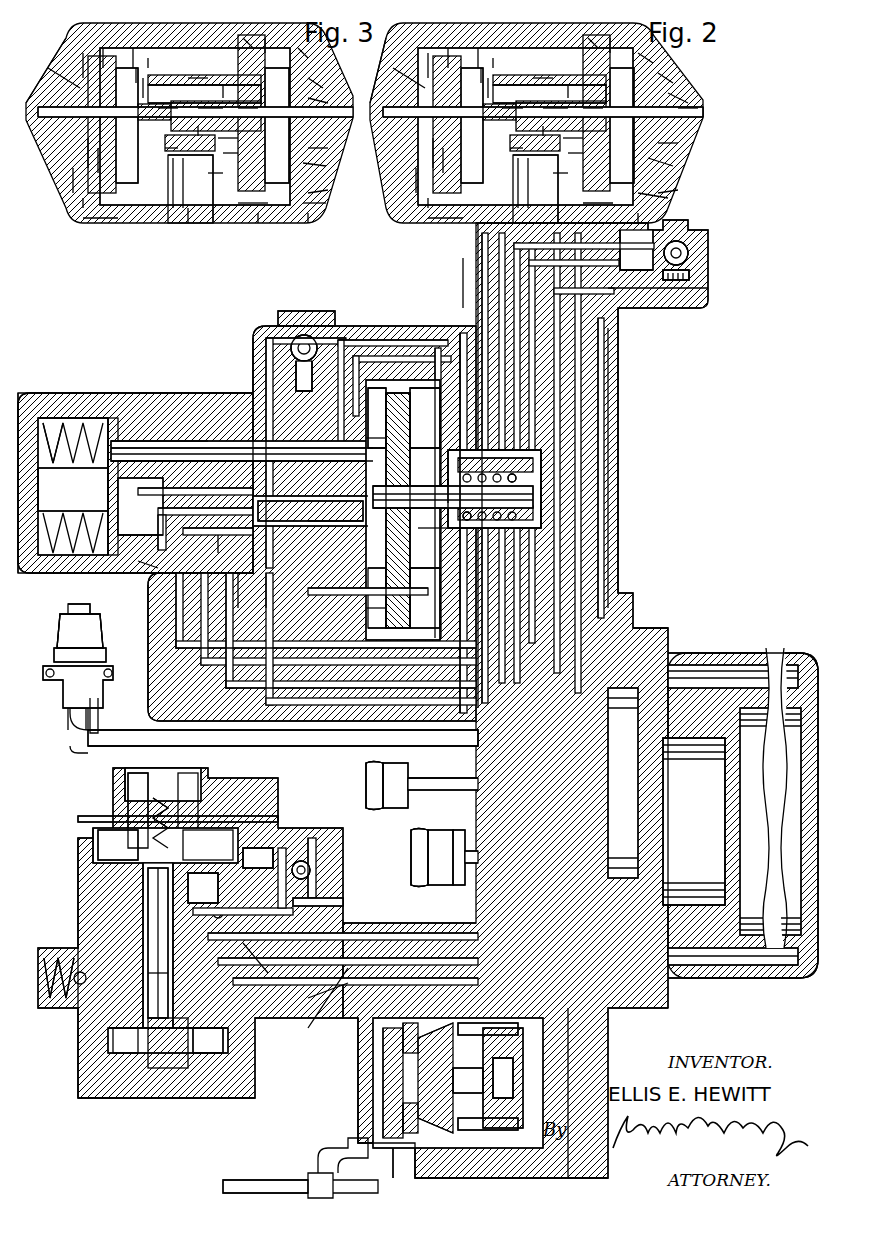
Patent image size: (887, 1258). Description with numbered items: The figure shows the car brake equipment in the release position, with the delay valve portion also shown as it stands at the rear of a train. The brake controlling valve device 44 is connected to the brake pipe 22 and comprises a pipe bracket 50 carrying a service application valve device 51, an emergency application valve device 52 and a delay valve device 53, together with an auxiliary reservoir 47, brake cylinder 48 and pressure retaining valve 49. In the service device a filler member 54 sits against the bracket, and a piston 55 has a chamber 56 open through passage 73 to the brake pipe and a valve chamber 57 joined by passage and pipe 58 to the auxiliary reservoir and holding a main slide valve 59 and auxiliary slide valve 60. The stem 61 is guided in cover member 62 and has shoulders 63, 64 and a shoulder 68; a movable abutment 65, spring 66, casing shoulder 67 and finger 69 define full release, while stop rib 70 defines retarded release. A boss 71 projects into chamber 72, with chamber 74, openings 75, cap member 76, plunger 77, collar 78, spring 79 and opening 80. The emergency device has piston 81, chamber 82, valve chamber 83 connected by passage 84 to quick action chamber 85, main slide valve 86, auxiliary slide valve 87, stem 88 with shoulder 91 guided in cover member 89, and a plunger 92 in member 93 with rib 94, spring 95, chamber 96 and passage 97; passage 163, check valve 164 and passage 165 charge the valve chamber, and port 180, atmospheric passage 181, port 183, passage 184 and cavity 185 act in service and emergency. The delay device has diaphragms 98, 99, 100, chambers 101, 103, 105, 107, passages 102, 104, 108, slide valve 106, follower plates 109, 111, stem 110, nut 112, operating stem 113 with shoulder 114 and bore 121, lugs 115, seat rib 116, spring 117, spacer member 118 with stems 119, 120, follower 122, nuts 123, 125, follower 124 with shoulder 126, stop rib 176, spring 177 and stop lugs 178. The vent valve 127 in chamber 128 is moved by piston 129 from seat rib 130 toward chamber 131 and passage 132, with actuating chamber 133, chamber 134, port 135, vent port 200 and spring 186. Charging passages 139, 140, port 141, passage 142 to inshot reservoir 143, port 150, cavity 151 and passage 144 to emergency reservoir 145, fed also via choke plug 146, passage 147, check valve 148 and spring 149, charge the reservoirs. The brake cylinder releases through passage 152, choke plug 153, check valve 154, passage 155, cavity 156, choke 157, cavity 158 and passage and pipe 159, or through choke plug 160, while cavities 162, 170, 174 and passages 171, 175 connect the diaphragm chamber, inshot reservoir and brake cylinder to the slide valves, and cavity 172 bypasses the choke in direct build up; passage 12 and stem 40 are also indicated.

In FIG. 2, the passage 12 is at (267, 577).
In FIG. 2, the brake pipe 22 is at (240, 1172).
In FIG. 2, the valve stem 40 is at (162, 945).
In FIG. 2, the brake controlling valve device 44 is at (432, 1180).
In FIG. 2, the auxiliary reservoir 47 is at (350, 762).
In FIG. 2, the brake cylinder 48 is at (397, 842).
In FIG. 2, the pressure retaining valve 49 is at (46, 623).
In FIG. 2, the pipe bracket 50 is at (620, 380).
In FIG. 2, the service application valve device 51 is at (112, 385).
In FIG. 2, the emergency application valve device 52 is at (62, 875).
In FIG. 3, the delay valve device 53 is at (142, 48).
In FIG. 2, the delay valve device 53 is at (488, 48).
In FIG. 2, the filler member 54 is at (432, 340).
In FIG. 2, the piston 55 is at (445, 392).
In FIG. 2, the chamber 56 is at (440, 405).
In FIG. 2, the valve chamber 57 is at (170, 455).
In FIG. 3, the passage and pipe 58 is at (302, 212).
In FIG. 2, the passage and pipe 58 is at (436, 785).
In FIG. 2, the main slide valve 59 is at (165, 480).
In FIG. 2, the auxiliary slide valve 60 is at (240, 455).
In FIG. 2, the stem 61 is at (215, 436).
In FIG. 2, the cover member 62 is at (20, 400).
In FIG. 2, the shoulder 63 is at (380, 480).
In FIG. 2, the shoulder 64 is at (125, 480).
In FIG. 2, the movable abutment 65 is at (75, 408).
In FIG. 2, the spring 66 is at (50, 420).
In FIG. 2, the shoulder 67 is at (105, 420).
In FIG. 2, the shoulder 68 is at (150, 435).
In FIG. 2, the finger 69 is at (140, 580).
In FIG. 2, the annular stop rib 70 is at (378, 430).
In FIG. 2, the boss 71 is at (528, 445).
In FIG. 2, the chamber 72 is at (533, 520).
In FIG. 2, the passage 73 is at (560, 1150).
In FIG. 2, the chamber 74 is at (520, 470).
In FIG. 2, the openings 75 is at (480, 450).
In FIG. 2, the cap member 76 is at (415, 520).
In FIG. 2, the plunger 77 is at (400, 478).
In FIG. 2, the annular collar 78 is at (440, 455).
In FIG. 2, the spring 79 is at (460, 520).
In FIG. 2, the opening 80 is at (429, 547).
In FIG. 2, the piston 81 is at (90, 868).
In FIG. 2, the chamber 82 is at (90, 832).
In FIG. 2, the valve chamber 83 is at (140, 915).
In FIG. 2, the passage 84 is at (310, 985).
In FIG. 2, the quick action chamber 85 is at (680, 880).
In FIG. 2, the main slide valve 86 is at (135, 905).
In FIG. 2, the auxiliary slide valve 87 is at (140, 970).
In FIG. 2, the stem 88 is at (135, 1018).
In FIG. 2, the cover member 89 is at (80, 1086).
In FIG. 2, the shoulder 91 is at (200, 1045).
In FIG. 2, the plunger 92 is at (135, 805).
In FIG. 2, the member 93 is at (70, 810).
In FIG. 2, the annular rib 94 is at (135, 790).
In FIG. 2, the spring 95 is at (172, 762).
In FIG. 2, the chamber 96 is at (130, 770).
In FIG. 2, the passage 97 is at (165, 830).
In FIG. 3, the flexible diaphragm 98 is at (292, 42).
In FIG. 2, the flexible diaphragm 98 is at (632, 47).
In FIG. 3, the flexible diaphragm 99 is at (136, 72).
In FIG. 2, the flexible diaphragm 99 is at (482, 72).
In FIG. 3, the flexible diaphragm 100 is at (58, 36).
In FIG. 2, the flexible diaphragm 100 is at (395, 36).
In FIG. 3, the chamber 101 is at (292, 72).
In FIG. 2, the chamber 101 is at (652, 67).
In FIG. 3, the passage 102 is at (255, 212).
In FIG. 2, the passage 102 is at (445, 274).
In FIG. 3, the chamber 103 is at (70, 170).
In FIG. 2, the chamber 103 is at (412, 170).
In FIG. 3, the passage 104 is at (75, 212).
In FIG. 2, the passage 104 is at (420, 212).
In FIG. 3, the valve chamber 105 is at (215, 76).
In FIG. 2, the valve chamber 105 is at (560, 76).
In FIG. 3, the slide valve 106 is at (205, 166).
In FIG. 2, the slide valve 106 is at (548, 166).
In FIG. 3, the atmospheric chamber 107 is at (100, 38).
In FIG. 2, the atmospheric chamber 107 is at (442, 38).
In FIG. 3, the atmospheric passage 108 is at (126, 40).
In FIG. 2, the atmospheric passage 108 is at (472, 40).
In FIG. 3, the follower plate 109 is at (257, 30).
In FIG. 2, the follower plate 109 is at (602, 30).
In FIG. 3, the stem 110 is at (300, 142).
In FIG. 2, the stem 110 is at (652, 137).
In FIG. 2, the follower plate 111 is at (670, 102).
In FIG. 3, the nut 112 is at (296, 157).
In FIG. 2, the nut 112 is at (642, 152).
In FIG. 3, the valve operating stem 113 is at (215, 140).
In FIG. 2, the valve operating stem 113 is at (558, 140).
In FIG. 3, the shoulder 114 is at (237, 169).
In FIG. 2, the shoulder 114 is at (578, 169).
In FIG. 3, the lugs 115 is at (300, 186).
In FIG. 2, the lugs 115 is at (650, 160).
In FIG. 3, the seat rib 116 is at (235, 28).
In FIG. 2, the seat rib 116 is at (580, 28).
In FIG. 3, the spring 117 is at (296, 196).
In FIG. 2, the spring 117 is at (632, 186).
In FIG. 3, the combined follower and spacer member 118 is at (75, 58).
In FIG. 2, the combined follower and spacer member 118 is at (420, 58).
In FIG. 3, the stem 119 is at (72, 90).
In FIG. 2, the stem 119 is at (417, 90).
In FIG. 3, the stem 120 is at (212, 97).
In FIG. 2, the stem 120 is at (557, 97).
In FIG. 3, the axial bore 121 is at (250, 97).
In FIG. 2, the axial bore 121 is at (592, 97).
In FIG. 3, the follower plate 122 is at (88, 150).
In FIG. 2, the follower plate 122 is at (435, 150).
In FIG. 3, the nut 123 is at (80, 140).
In FIG. 2, the nut 123 is at (425, 140).
In FIG. 3, the follower 124 is at (190, 68).
In FIG. 2, the follower 124 is at (528, 68).
In FIG. 3, the nut 125 is at (172, 97).
In FIG. 2, the nut 125 is at (520, 97).
In FIG. 3, the shoulder 126 is at (160, 142).
In FIG. 2, the shoulder 126 is at (505, 142).
In FIG. 2, the vent valve 127 is at (500, 1012).
In FIG. 2, the chamber 128 is at (490, 1098).
In FIG. 2, the piston 129 is at (395, 1065).
In FIG. 2, the seat rib 130 is at (450, 1090).
In FIG. 2, the chamber 131 is at (375, 1110).
In FIG. 2, the atmospheric passage 132 is at (385, 1133).
In FIG. 2, the actuating chamber 133 is at (380, 1065).
In FIG. 2, the chamber 134 is at (400, 1080).
In FIG. 2, the port 135 is at (455, 1015).
In FIG. 2, the charging passage 139 is at (402, 380).
In FIG. 2, the charging passage 140 is at (372, 378).
In FIG. 2, the restricted port 141 is at (312, 490).
In FIG. 2, the passage 142 is at (360, 590).
In FIG. 2, the inshot reservoir 143 is at (665, 660).
In FIG. 2, the passage 144 is at (340, 975).
In FIG. 2, the emergency reservoir 145 is at (712, 668).
In FIG. 2, the choke plug 146 is at (456, 325).
In FIG. 2, the passage 147 is at (338, 330).
In FIG. 2, the check valve 148 is at (288, 360).
In FIG. 2, the spring 149 is at (283, 333).
In FIG. 2, the restricted port 150 is at (310, 507).
In FIG. 2, the cavity 151 is at (300, 490).
In FIG. 3, the pipe and passage 152 is at (182, 215).
In FIG. 2, the pipe and passage 152 is at (470, 820).
In FIG. 2, the release choke plug 153 is at (683, 267).
In FIG. 2, the check valve 154 is at (682, 243).
In FIG. 3, the passage 155 is at (255, 198).
In FIG. 2, the passage 155 is at (262, 960).
In FIG. 2, the cavity 156 is at (125, 527).
In FIG. 2, the retarded release choke 157 is at (177, 523).
In FIG. 2, the cavity 158 is at (190, 527).
In FIG. 2, the passage and pipe 159 is at (45, 718).
In FIG. 2, the delayed application choke plug 160 is at (605, 345).
In FIG. 2, the cavity 162 is at (232, 547).
In FIG. 2, the passage 163 is at (265, 845).
In FIG. 2, the check valve 164 is at (303, 863).
In FIG. 2, the passage 165 is at (335, 895).
In FIG. 2, the cavity 170 is at (343, 517).
In FIG. 3, the passage 171 is at (160, 183).
In FIG. 2, the passage 171 is at (325, 588).
In FIG. 3, the cavity 172 is at (192, 125).
In FIG. 2, the cavity 172 is at (537, 125).
In FIG. 2, the cavity 174 is at (135, 975).
In FIG. 2, the passage 175 is at (248, 612).
In FIG. 3, the stop rib 176 is at (175, 170).
In FIG. 2, the stop rib 176 is at (520, 175).
In FIG. 3, the spring 177 is at (130, 62).
In FIG. 2, the spring 177 is at (475, 62).
In FIG. 3, the stop lugs 178 is at (76, 192).
In FIG. 2, the stop lugs 178 is at (420, 192).
In FIG. 2, the port 180 is at (160, 943).
In FIG. 2, the atmospheric passage 181 is at (205, 900).
In FIG. 2, the port 183 is at (300, 970).
In FIG. 2, the passage 184 is at (345, 985).
In FIG. 2, the cavity 185 is at (288, 960).
In FIG. 2, the spring 186 is at (505, 1080).
In FIG. 2, the vent port 200 is at (375, 1050).